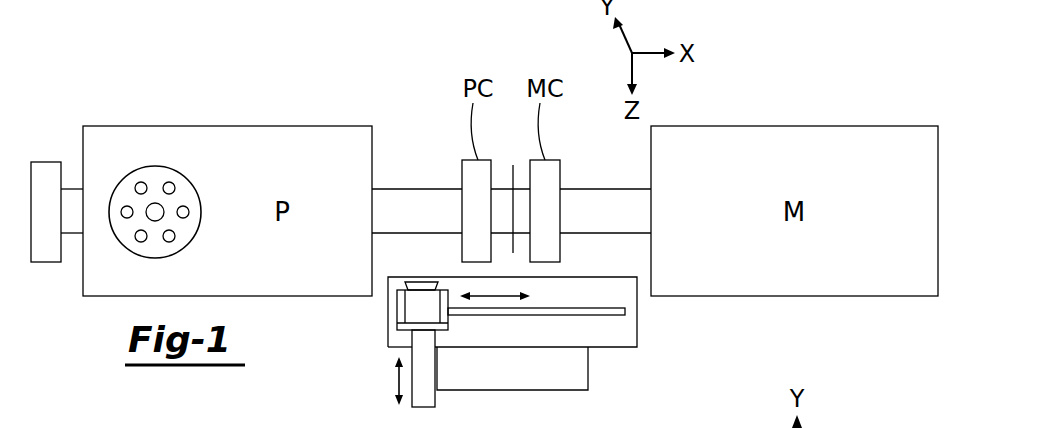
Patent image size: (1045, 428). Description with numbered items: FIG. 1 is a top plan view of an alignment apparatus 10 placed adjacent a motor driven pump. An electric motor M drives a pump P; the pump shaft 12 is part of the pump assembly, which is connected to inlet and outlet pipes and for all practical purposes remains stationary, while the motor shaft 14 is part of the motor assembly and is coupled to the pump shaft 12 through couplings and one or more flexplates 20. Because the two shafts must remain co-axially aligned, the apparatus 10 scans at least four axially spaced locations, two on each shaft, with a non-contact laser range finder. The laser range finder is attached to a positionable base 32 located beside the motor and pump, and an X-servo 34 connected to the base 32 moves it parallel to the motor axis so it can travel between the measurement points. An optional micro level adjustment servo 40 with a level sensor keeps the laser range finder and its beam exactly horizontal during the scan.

The apparatus 10 is at (657, 360).
The pump shaft 12 is at (418, 189).
The motor shaft 14 is at (596, 189).
The flexplate 20 is at (513, 165).
The positionable base 32 is at (388, 334).
The X-servo 34 is at (600, 316).
The micro level adjustment servo 40 is at (550, 390).